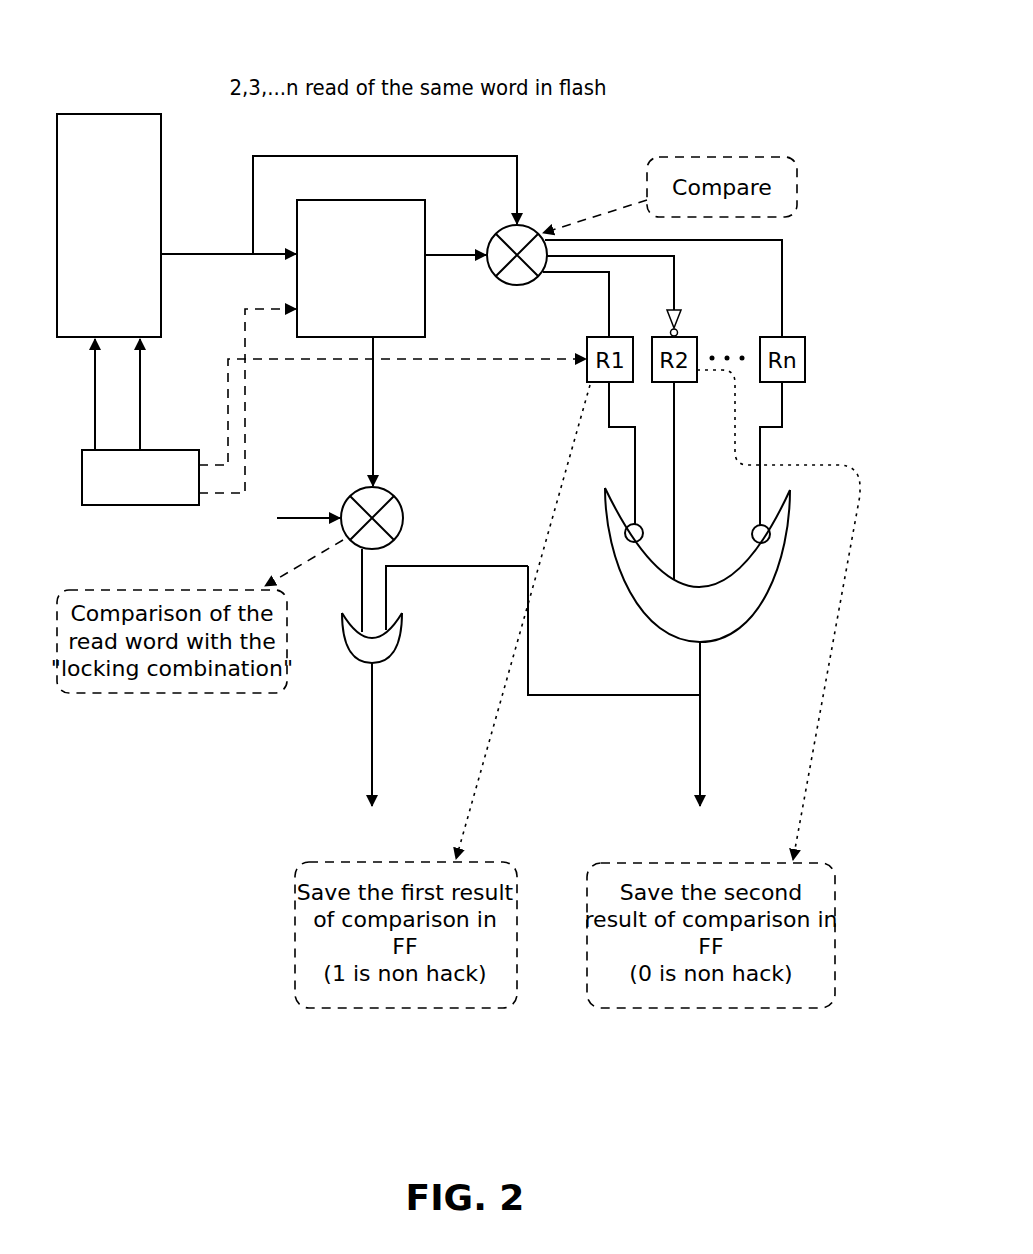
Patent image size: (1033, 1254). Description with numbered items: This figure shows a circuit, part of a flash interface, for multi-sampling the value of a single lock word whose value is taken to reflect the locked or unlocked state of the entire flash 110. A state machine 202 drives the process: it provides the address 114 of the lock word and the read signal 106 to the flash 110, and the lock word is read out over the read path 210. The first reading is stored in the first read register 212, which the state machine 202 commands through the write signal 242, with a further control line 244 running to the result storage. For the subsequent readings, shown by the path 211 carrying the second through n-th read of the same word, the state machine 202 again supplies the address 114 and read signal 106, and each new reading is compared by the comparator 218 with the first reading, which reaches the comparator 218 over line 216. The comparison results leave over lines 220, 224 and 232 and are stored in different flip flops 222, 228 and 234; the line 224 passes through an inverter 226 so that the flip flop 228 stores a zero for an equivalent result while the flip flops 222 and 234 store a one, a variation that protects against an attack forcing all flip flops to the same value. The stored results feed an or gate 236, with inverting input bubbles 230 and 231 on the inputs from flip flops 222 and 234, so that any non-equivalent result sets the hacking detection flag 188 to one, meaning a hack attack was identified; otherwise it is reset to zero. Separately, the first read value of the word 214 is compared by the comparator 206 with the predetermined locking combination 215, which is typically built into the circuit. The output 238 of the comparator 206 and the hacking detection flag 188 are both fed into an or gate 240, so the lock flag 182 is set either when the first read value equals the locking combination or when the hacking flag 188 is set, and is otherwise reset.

The flash 110 is at (89, 113).
The state machine 202 is at (145, 506).
The address 114 is at (92, 372).
The read signal 106 is at (144, 372).
The read data path 210 is at (202, 253).
The subsequent read data path 211 is at (459, 155).
The first read register 212 is at (368, 200).
The write signal 242 is at (251, 308).
The register control signal 244 is at (511, 362).
The first read register output 216 is at (451, 254).
The comparator 218 is at (503, 280).
The comparison result line to R1 220 is at (608, 311).
The comparison result line to inverter 224 is at (675, 288).
The inverter 226 is at (680, 323).
The comparison result line to Rn 232 is at (783, 297).
The flip flop 222 is at (601, 394).
The flip flop 228 is at (680, 394).
The flip flop 234 is at (795, 392).
The inverting input bubble 230 is at (644, 531).
The inverting input bubble 231 is at (752, 537).
The or gate 236 is at (747, 626).
The hacking detection flag 188 is at (701, 748).
The first read value of the word 214 is at (375, 440).
The predetermined locking combination 215 is at (291, 517).
The comparator 206 is at (393, 491).
The comparator output line 238 is at (360, 586).
The or gate 240 is at (397, 650).
The lock flag 182 is at (369, 731).